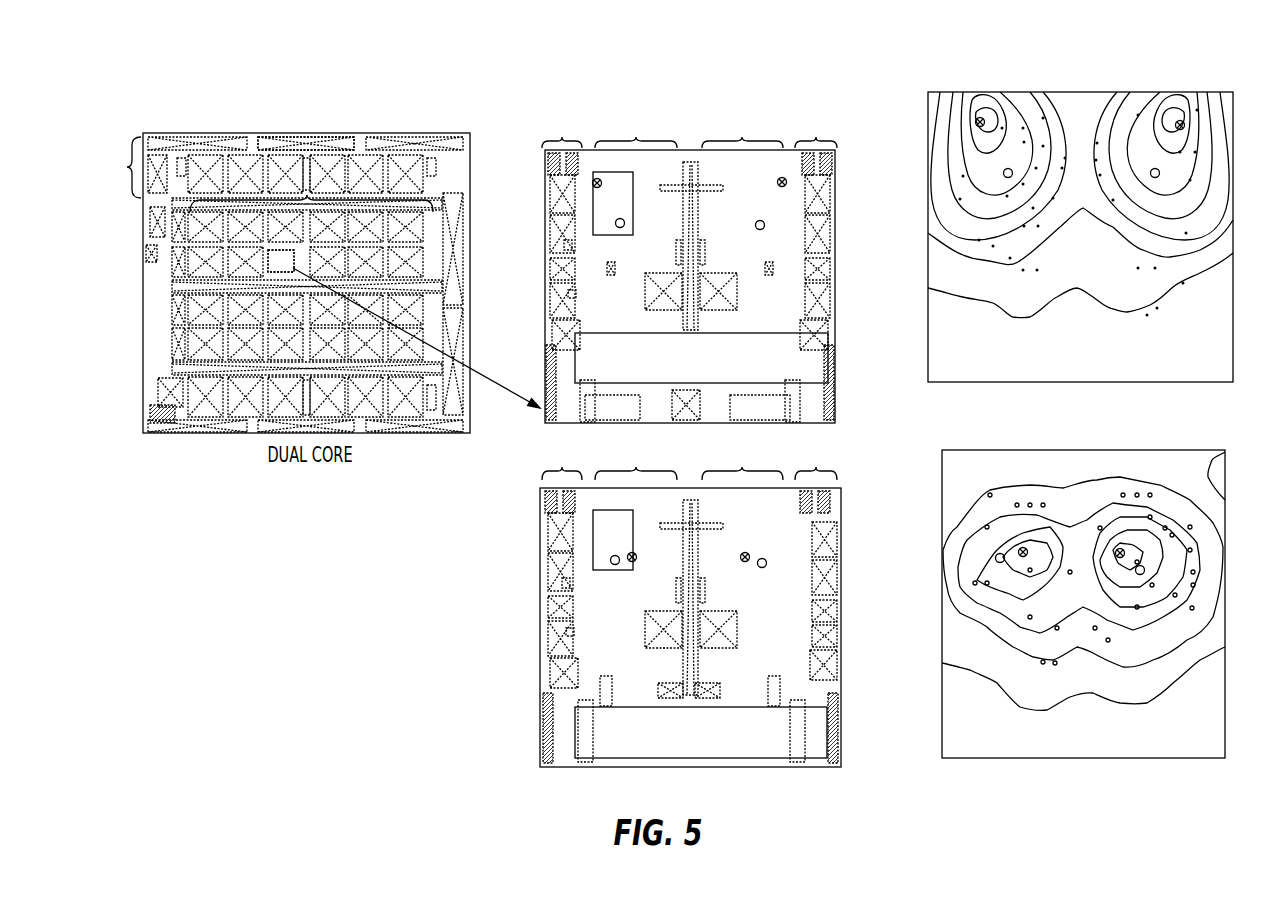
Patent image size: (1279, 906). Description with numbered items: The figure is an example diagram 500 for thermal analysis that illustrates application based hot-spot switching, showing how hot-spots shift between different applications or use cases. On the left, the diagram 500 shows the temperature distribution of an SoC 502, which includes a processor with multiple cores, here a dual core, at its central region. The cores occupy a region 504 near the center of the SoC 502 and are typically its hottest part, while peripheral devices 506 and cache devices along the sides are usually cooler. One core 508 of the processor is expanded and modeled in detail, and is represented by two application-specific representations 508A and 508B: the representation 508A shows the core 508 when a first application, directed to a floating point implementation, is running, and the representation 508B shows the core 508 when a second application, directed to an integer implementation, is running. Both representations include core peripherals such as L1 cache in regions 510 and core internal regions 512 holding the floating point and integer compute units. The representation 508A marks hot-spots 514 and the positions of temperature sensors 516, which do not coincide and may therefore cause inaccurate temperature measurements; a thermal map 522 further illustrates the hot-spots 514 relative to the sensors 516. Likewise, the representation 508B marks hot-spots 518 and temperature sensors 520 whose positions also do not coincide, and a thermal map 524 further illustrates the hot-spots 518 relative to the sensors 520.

The diagram 500 is at (600, 85).
The SoC 502 is at (265, 142).
The region 504 is at (307, 196).
The peripheral devices 506 is at (117, 167).
The core 508 is at (258, 261).
The application-specific representation 508A is at (542, 368).
The application-specific representation 508B is at (538, 740).
The regions 510 is at (816, 460).
The core internal regions 512 is at (742, 460).
The hot-spots 514 is at (593, 184).
The temperature sensors 516 is at (616, 225).
The hot-spots 518 is at (628, 553).
The temperature sensors 520 is at (611, 562).
The thermal map 522 is at (1108, 91).
The thermal map 524 is at (998, 760).